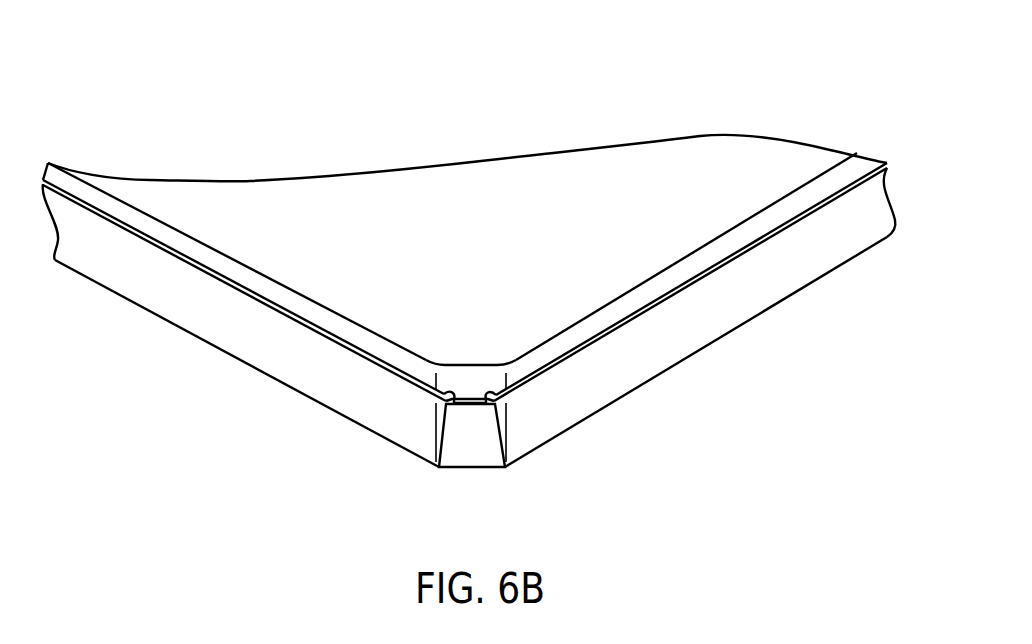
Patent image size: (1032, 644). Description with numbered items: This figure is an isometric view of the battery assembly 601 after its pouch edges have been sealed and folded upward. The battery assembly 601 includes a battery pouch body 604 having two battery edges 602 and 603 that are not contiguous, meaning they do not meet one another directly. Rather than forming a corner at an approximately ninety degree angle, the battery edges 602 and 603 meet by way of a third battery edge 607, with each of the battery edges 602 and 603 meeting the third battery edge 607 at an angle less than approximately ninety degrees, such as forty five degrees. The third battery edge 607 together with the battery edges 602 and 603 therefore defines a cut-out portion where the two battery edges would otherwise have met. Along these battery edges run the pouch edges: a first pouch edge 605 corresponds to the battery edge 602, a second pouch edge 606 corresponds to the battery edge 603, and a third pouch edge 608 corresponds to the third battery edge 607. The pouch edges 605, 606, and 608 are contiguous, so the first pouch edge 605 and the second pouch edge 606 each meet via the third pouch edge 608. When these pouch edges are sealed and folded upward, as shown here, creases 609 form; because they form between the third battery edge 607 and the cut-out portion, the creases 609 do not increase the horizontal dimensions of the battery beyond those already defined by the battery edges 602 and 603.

The battery assembly 601 is at (624, 440).
The battery edge 602 is at (692, 265).
The battery edge 603 is at (303, 308).
The battery pouch body 604 is at (493, 172).
The first pouch edge 605 is at (700, 335).
The second pouch edge 606 is at (343, 400).
The third battery edge 607 is at (470, 383).
The third pouch edge 608 is at (468, 452).
The creases 609 is at (437, 428).